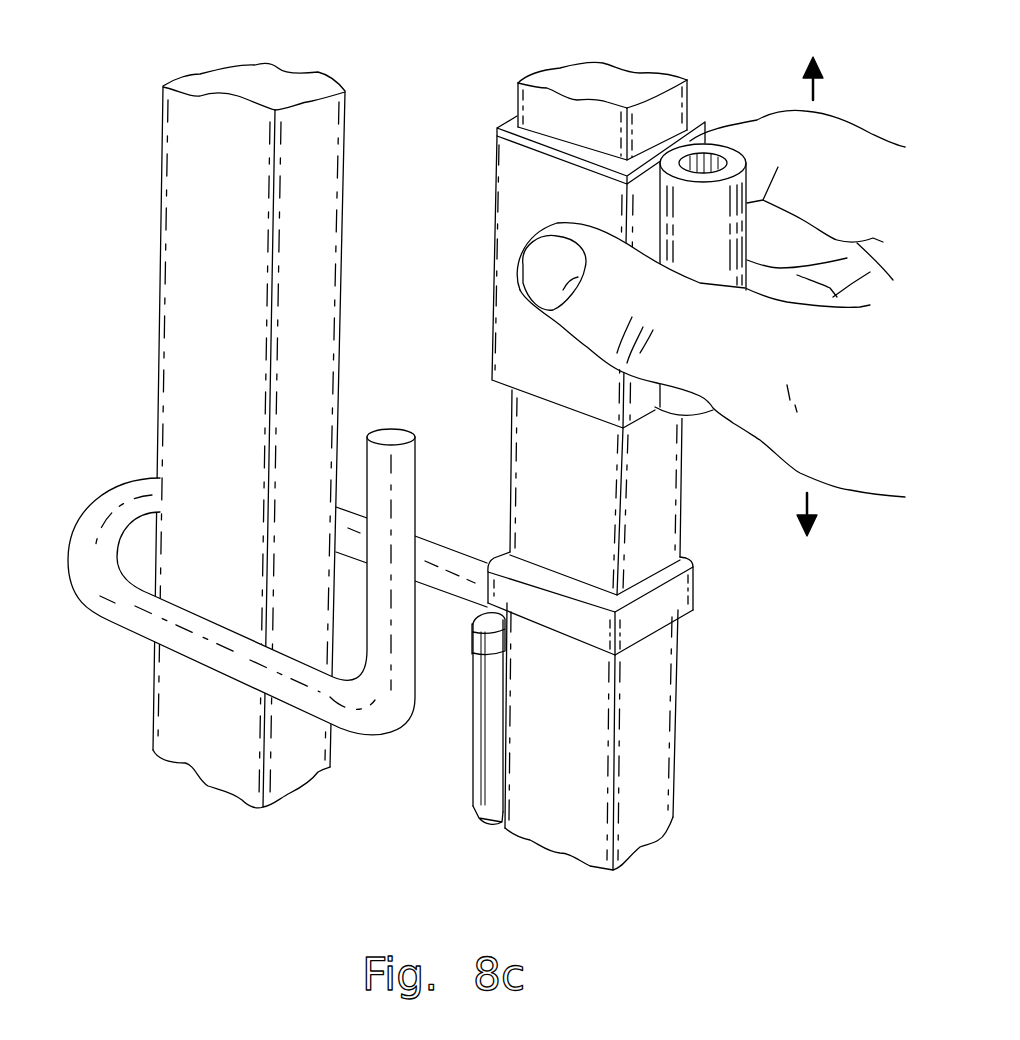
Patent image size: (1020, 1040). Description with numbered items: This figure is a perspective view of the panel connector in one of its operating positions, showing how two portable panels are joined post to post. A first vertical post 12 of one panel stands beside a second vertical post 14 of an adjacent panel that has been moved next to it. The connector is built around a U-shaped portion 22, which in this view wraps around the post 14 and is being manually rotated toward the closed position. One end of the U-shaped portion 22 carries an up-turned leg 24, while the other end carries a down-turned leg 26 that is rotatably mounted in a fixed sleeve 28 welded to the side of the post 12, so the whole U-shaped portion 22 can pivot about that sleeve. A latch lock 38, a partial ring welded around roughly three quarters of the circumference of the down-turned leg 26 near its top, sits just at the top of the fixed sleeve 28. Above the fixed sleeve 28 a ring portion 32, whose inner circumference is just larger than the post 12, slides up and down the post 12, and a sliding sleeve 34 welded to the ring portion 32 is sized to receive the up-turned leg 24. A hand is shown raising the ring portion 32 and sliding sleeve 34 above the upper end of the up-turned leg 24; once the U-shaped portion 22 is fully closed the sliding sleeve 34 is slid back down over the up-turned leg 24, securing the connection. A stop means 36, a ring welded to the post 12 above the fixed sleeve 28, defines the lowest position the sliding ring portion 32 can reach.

The first vertical post 12 is at (533, 102).
The second vertical post 14 is at (180, 243).
The U-shaped portion 22 is at (100, 510).
The up-turned leg 24 is at (390, 435).
The down-turned leg 26 is at (502, 823).
The fixed sleeve 28 is at (440, 748).
The ring portion 32 is at (530, 177).
The sliding sleeve 34 is at (750, 152).
The stop means 36 is at (697, 587).
The latch lock 38 is at (473, 632).